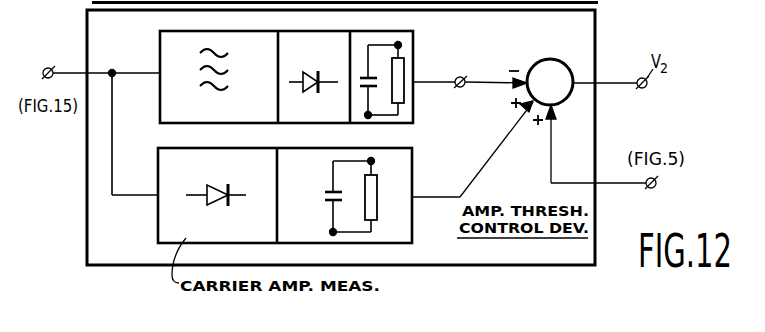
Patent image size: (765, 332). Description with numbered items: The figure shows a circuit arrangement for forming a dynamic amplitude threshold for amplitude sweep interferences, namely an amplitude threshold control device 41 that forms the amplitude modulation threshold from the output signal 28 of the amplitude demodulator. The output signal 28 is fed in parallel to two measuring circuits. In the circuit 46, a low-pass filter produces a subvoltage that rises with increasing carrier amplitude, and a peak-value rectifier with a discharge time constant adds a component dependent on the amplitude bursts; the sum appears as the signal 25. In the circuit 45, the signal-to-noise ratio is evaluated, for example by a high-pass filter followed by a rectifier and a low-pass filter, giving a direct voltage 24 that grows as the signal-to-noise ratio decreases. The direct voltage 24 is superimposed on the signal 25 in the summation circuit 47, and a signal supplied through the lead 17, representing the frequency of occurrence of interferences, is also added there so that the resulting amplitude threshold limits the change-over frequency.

The output signal of the amplitude demodulator 28 is at (45, 68).
The amplitude threshold control device 41 is at (597, 38).
The circuit for evaluating the signal-to-noise ratio 45 is at (414, 44).
The circuit with low-pass filter and peak-value rectifier 46 is at (413, 165).
The direct voltage 24 is at (415, 84).
The signal at output of circuit 46 25 is at (425, 200).
The summation circuit 47 is at (556, 60).
The lead 17 is at (550, 160).